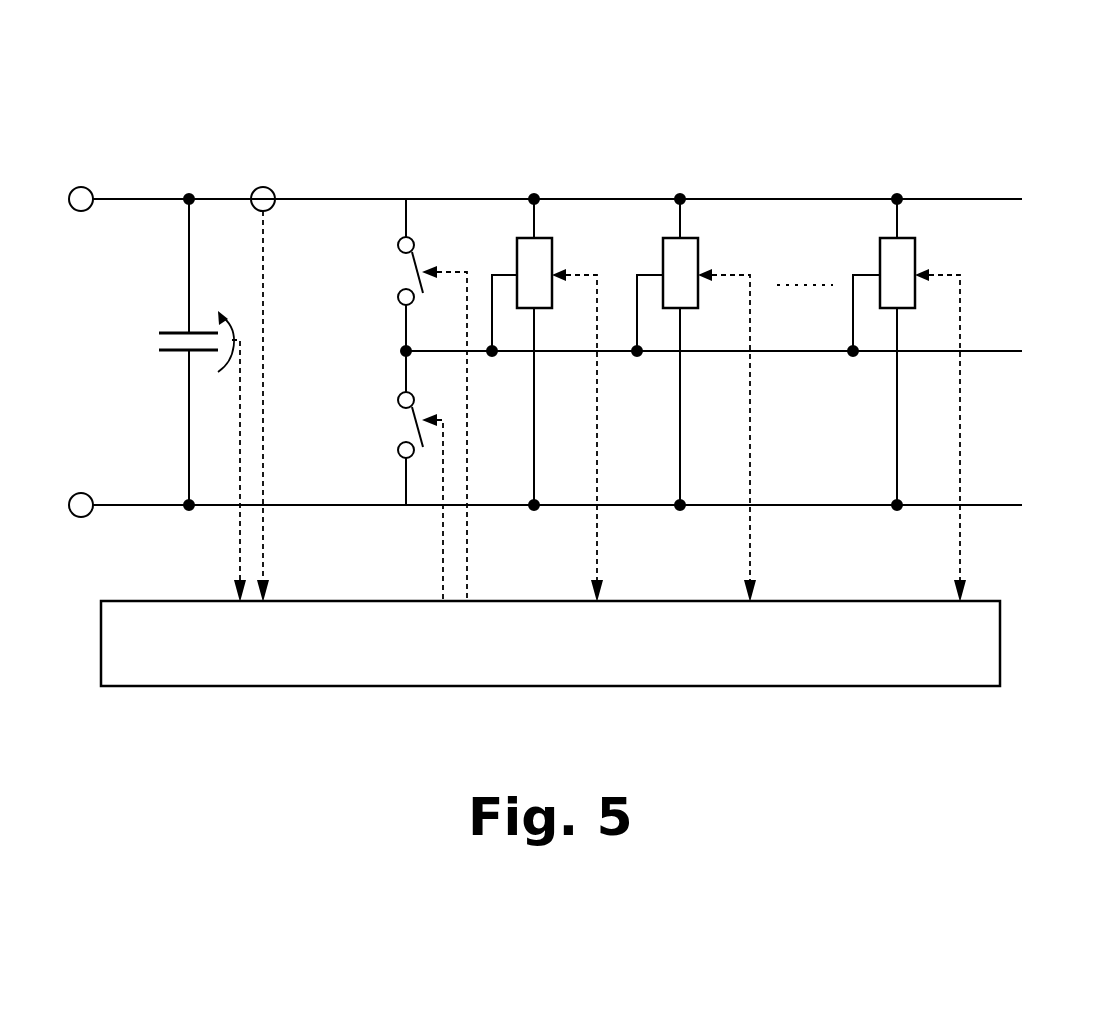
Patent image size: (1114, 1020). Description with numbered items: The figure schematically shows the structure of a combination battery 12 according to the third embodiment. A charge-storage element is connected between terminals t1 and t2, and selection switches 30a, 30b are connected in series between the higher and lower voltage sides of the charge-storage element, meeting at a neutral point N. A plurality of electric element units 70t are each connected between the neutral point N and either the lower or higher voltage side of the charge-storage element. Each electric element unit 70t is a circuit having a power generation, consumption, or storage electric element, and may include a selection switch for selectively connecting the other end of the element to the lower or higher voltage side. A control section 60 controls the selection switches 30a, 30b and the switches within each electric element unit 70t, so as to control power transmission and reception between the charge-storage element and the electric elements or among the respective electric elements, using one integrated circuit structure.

The combination battery 12 is at (425, 122).
The terminal t1 is at (81, 187).
The terminal t2 is at (81, 493).
The selection switch 30a is at (376, 268).
The selection switch 30b is at (376, 418).
The neutral point N is at (404, 350).
The electric element unit 70t is at (552, 247).
The control section 60 is at (1000, 642).